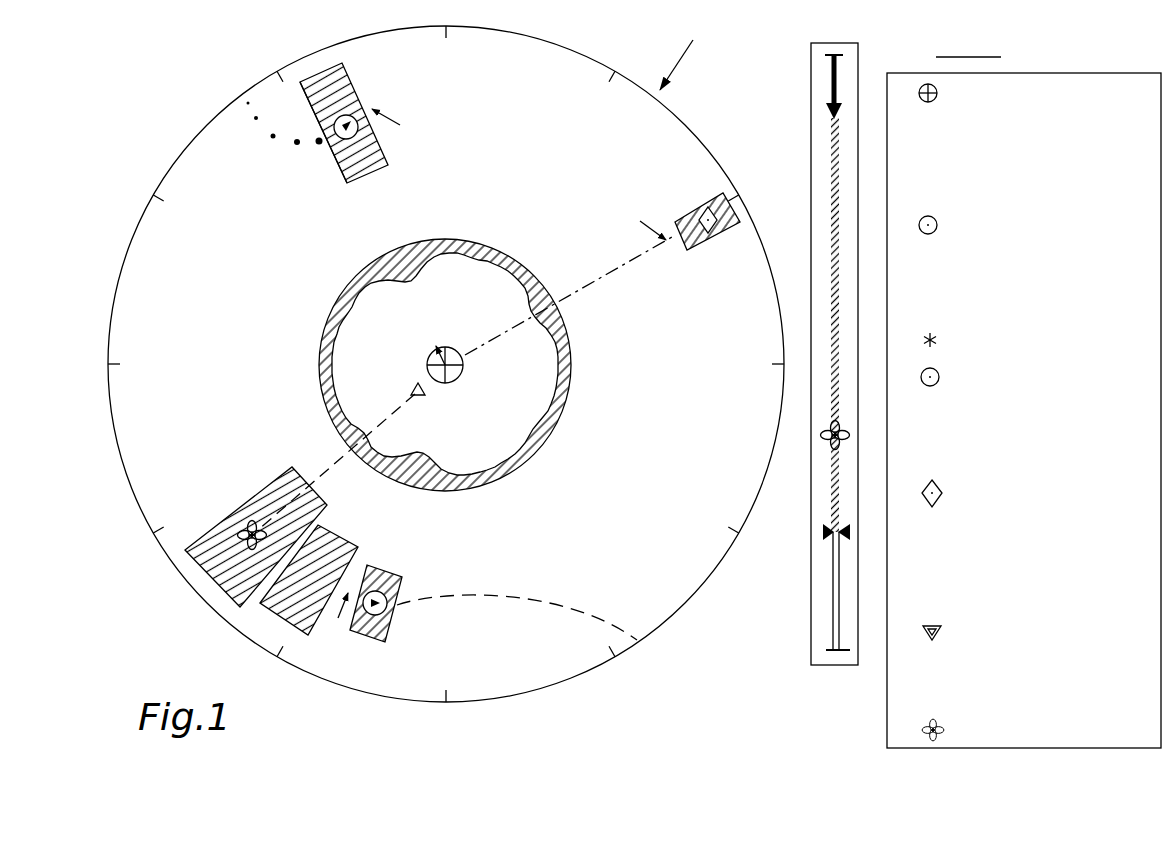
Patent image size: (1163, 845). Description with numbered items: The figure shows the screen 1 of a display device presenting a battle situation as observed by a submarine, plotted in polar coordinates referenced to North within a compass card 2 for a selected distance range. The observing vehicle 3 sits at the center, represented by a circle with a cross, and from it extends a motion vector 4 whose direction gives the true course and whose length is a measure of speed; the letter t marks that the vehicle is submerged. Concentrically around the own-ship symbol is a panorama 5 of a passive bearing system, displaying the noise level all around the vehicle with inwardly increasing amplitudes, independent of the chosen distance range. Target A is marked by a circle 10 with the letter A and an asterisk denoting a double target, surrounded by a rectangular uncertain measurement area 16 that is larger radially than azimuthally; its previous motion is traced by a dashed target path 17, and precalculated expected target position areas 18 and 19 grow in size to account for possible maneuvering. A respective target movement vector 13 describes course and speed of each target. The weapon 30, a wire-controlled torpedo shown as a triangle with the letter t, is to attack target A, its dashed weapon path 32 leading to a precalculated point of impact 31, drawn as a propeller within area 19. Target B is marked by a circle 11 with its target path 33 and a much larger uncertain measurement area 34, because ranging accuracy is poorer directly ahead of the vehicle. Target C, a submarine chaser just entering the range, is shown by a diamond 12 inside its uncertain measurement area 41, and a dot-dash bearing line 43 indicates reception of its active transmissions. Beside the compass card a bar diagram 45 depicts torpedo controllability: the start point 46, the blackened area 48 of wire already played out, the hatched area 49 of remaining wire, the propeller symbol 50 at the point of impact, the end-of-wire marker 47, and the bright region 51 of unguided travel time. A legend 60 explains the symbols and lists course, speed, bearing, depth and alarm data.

The screen 1 is at (687, 60).
The compass card 2 is at (218, 111).
The observing vehicle 3 is at (446, 347).
The motion vector 4 is at (428, 344).
The panorama of passive bearing system 5 is at (492, 249).
The circle marker for target A 10 is at (386, 601).
The circle marker for target B 11 is at (348, 120).
The diamond marker for target C 12 is at (706, 212).
The target movement vector 13 is at (494, 380).
The uncertain measurement area 16 is at (383, 578).
The target path 17 is at (503, 597).
The expected target position area 18 is at (338, 533).
The expected target position area 19 is at (284, 466).
The weapon 30 is at (412, 388).
The point of impact 31 is at (247, 529).
The weapon path 32 is at (380, 422).
The target path of target B 33 is at (271, 138).
The uncertain measurement area of target B 34 is at (347, 184).
The uncertain measurement area of target C 41 is at (687, 252).
The bearing line 43 is at (622, 268).
The bar diagram 45 is at (811, 92).
The start point 46 is at (837, 55).
The end-of-wire marker 47 is at (826, 532).
The blackened area 48 is at (830, 98).
The hatched area 49 is at (835, 183).
The propeller symbol 50 is at (826, 443).
The bright region 51 is at (833, 602).
The legend 60 is at (1093, 73).